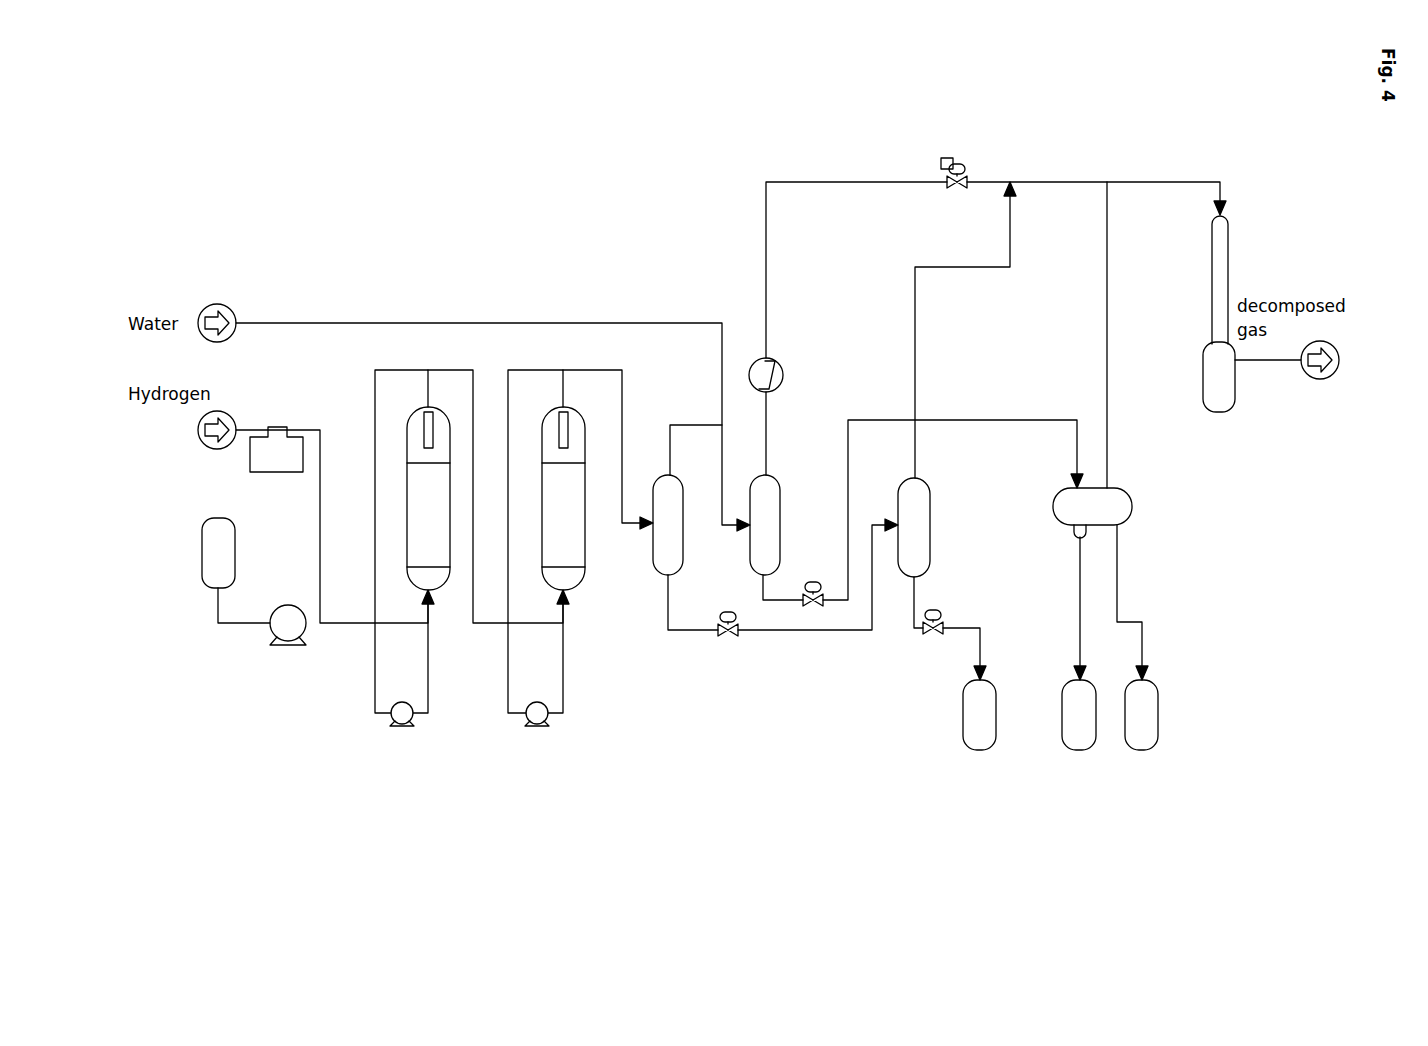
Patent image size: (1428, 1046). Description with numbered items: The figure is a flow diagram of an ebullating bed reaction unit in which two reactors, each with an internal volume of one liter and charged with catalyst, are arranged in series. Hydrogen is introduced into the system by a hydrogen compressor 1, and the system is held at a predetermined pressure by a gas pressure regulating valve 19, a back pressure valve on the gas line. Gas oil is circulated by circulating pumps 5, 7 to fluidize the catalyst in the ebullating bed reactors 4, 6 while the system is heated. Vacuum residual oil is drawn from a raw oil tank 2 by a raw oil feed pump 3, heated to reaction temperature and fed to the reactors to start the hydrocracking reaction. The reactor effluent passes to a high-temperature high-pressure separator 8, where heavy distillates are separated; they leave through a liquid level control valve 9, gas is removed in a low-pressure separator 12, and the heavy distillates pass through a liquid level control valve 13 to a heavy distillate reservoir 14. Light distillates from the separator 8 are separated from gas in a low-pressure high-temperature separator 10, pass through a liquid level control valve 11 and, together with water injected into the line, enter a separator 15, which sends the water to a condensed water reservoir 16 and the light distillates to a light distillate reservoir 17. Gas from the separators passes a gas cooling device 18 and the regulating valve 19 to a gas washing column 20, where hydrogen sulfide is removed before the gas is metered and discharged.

The hydrogen compressor 1 is at (251, 472).
The raw oil tank 2 is at (251, 554).
The raw oil feed pump 3 is at (255, 640).
The ebullating bed reactor 4 is at (412, 420).
The circulating pump 5 is at (396, 753).
The ebullating bed reactor 6 is at (578, 415).
The circulating pump 7 is at (528, 753).
The high-temperature high-pressure separator 8 is at (657, 578).
The liquid level control valve 9 is at (730, 640).
The low-pressure high-temperature separator 10 is at (757, 578).
The liquid level control valve 11 is at (823, 604).
The low-pressure separator 12 is at (968, 509).
The liquid level control valve 13 is at (985, 603).
The heavy distillate reservoir 14 is at (990, 764).
The separator 15 is at (1151, 513).
The condensed water reservoir 16 is at (1137, 754).
The light distillate reservoir 17 is at (1204, 716).
The gas cooling device 18 is at (816, 379).
The gas pressure regulating valve 19 is at (1080, 158).
The gas washing column 20 is at (1222, 339).